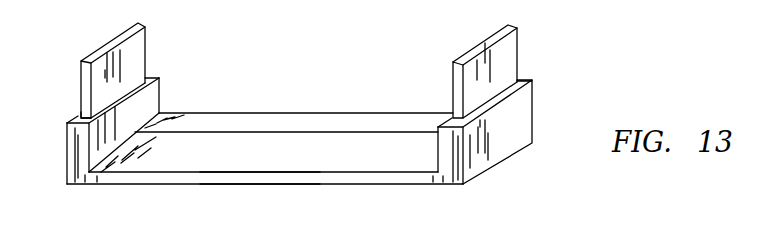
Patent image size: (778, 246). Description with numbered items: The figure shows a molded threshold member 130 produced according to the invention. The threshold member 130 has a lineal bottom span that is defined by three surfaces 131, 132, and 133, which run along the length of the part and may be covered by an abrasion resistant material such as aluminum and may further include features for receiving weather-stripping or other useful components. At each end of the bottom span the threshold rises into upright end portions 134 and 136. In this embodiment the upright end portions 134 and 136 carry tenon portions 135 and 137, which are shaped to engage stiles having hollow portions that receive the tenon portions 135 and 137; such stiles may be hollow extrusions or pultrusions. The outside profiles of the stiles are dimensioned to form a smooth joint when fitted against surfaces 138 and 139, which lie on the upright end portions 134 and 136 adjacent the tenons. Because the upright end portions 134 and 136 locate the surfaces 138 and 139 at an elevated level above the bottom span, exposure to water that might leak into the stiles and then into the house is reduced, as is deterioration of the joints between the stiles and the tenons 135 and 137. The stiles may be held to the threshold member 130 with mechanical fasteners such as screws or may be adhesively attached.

The threshold member 130 is at (330, 62).
The surface 131 is at (225, 123).
The surface 132 is at (352, 157).
The surface 133 is at (257, 180).
The upright end portion 134 is at (66, 155).
The tenon portion 135 is at (147, 38).
The upright end portion 136 is at (463, 157).
The tenon portion 137 is at (518, 38).
The surface 138 is at (78, 118).
The surface 139 is at (527, 78).